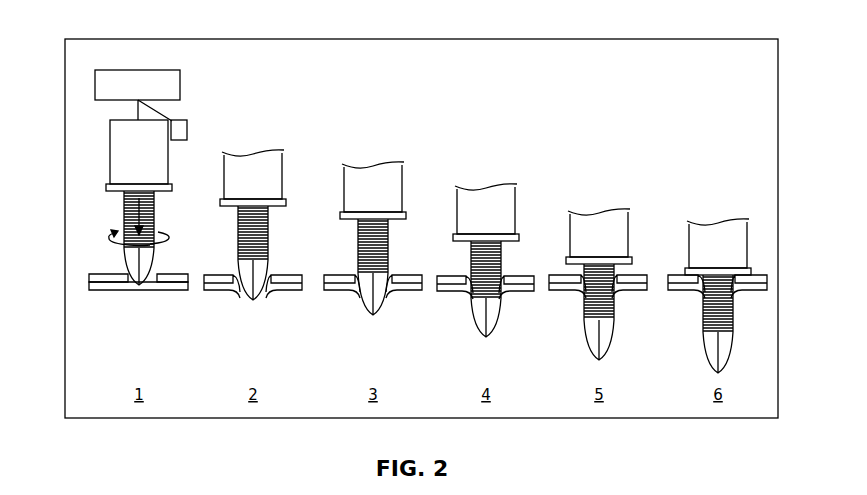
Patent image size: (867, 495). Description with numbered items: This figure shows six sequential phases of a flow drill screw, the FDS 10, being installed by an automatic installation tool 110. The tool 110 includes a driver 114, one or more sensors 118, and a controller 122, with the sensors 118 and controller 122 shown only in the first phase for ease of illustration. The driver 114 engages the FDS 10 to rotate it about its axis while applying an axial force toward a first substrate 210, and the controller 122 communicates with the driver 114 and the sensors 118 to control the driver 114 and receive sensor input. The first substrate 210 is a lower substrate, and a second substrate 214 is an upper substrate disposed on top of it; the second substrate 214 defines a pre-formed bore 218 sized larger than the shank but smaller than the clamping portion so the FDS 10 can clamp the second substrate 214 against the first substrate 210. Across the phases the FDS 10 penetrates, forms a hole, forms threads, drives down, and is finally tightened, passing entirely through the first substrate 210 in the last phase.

The installation tool 110 is at (104, 57).
The controller 122 is at (181, 90).
The sensors 118 is at (188, 130).
The driver 114 is at (110, 165).
The FDS 10 is at (118, 228).
The pre-formed bore 218 is at (130, 273).
The first substrate 210 is at (168, 291).
The second substrate 214 is at (89, 289).